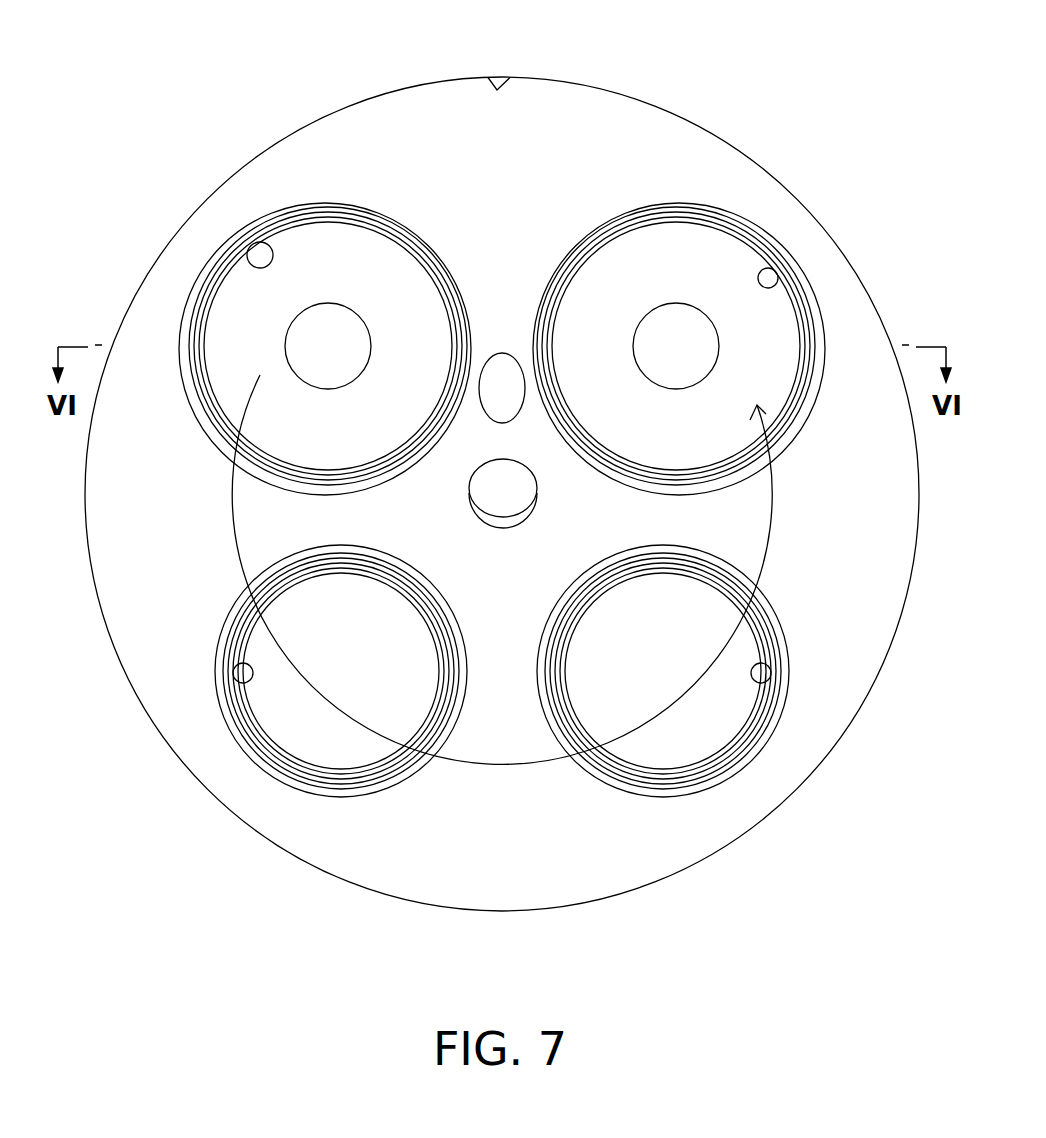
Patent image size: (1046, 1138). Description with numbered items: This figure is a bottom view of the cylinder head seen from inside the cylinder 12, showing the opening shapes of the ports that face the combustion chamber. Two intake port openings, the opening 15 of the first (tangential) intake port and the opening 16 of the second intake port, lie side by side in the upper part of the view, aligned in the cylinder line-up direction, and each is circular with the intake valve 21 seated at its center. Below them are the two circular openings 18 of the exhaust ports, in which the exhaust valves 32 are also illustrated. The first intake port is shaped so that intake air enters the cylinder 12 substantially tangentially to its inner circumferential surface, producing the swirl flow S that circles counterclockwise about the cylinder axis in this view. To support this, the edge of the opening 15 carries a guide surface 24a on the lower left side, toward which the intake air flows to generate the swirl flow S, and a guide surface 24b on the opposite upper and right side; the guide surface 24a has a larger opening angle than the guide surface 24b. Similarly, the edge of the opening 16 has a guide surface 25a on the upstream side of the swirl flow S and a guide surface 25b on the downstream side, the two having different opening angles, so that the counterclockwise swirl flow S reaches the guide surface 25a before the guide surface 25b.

The cylinder 12 is at (506, 78).
The opening of the first intake port 15 is at (298, 334).
The opening of the second intake port 16 is at (720, 327).
The openings of the exhaust ports 18 is at (502, 705).
The intake valve 21 is at (310, 260).
The guide surface 24a is at (208, 428).
The guide surface 24b is at (402, 230).
The guide surface 25a is at (797, 427).
The guide surface 25b is at (607, 212).
The exhaust valve 32 is at (293, 732).
The swirl flow S is at (503, 768).